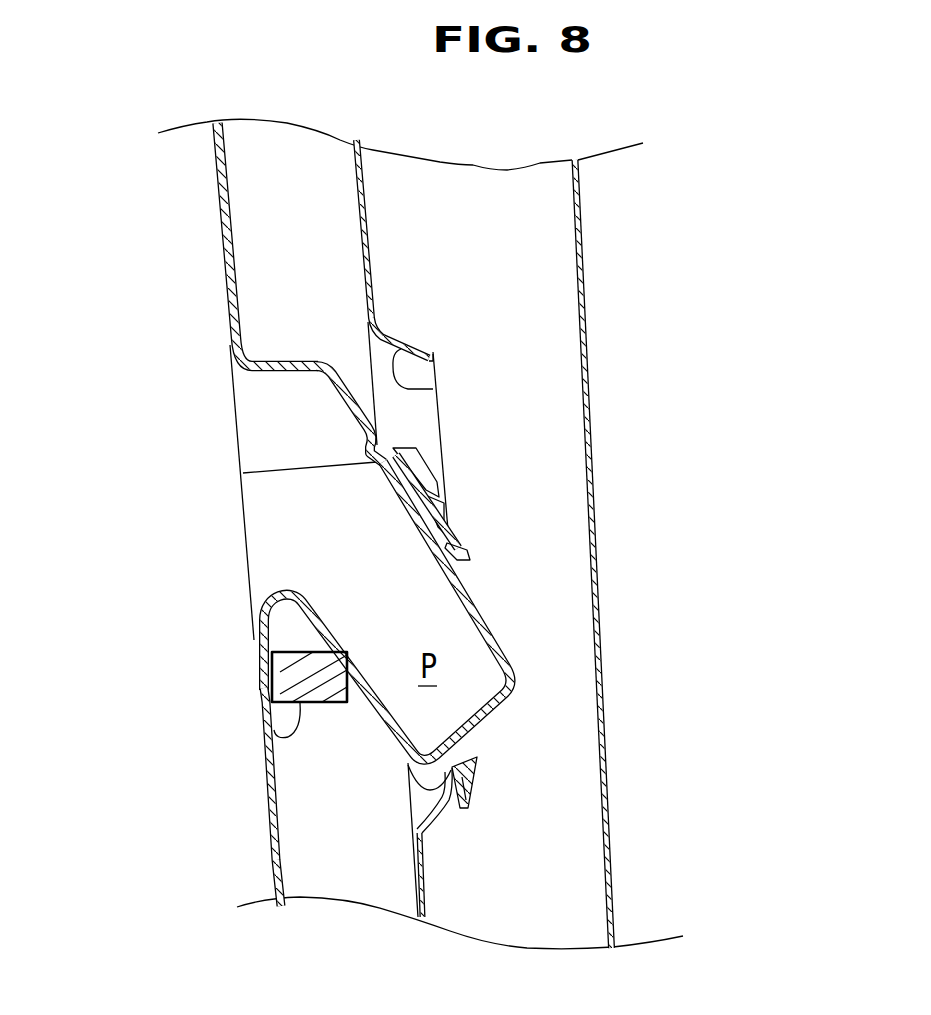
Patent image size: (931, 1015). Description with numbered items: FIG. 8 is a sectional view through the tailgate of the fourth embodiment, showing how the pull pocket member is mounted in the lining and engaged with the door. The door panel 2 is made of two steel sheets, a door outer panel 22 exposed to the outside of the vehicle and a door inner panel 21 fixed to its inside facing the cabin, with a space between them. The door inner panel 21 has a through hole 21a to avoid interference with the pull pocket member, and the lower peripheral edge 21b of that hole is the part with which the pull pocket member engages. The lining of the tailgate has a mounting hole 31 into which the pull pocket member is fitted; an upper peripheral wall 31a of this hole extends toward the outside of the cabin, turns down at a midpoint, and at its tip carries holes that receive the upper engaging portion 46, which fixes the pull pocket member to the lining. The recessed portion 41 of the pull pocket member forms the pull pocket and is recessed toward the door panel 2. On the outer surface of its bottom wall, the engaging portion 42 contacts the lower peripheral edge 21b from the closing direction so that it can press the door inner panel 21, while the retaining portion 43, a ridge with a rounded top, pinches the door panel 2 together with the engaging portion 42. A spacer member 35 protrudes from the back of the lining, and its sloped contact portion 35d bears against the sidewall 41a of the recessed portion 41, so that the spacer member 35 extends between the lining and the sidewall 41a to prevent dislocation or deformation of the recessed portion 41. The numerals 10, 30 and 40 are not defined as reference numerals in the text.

The door panel 2 is at (693, 178).
The mounting structure 10 is at (683, 462).
The door inner panel 21 is at (368, 215).
The through hole 21a is at (433, 390).
The lower peripheral edge 21b is at (438, 827).
The door outer panel 22 is at (587, 305).
The vehicle body panel 30 is at (205, 238).
The mounting hole 31 is at (256, 645).
The upper peripheral wall 31a is at (295, 375).
The spacer member 35 is at (313, 707).
The contact portion 35d is at (344, 650).
The clip member 40 is at (518, 697).
The recessed portion 41 is at (470, 593).
The sidewall 41a is at (392, 737).
The engaging portion 42 is at (477, 768).
The retaining portion 43 is at (423, 778).
The upper engaging portion 46 is at (447, 517).